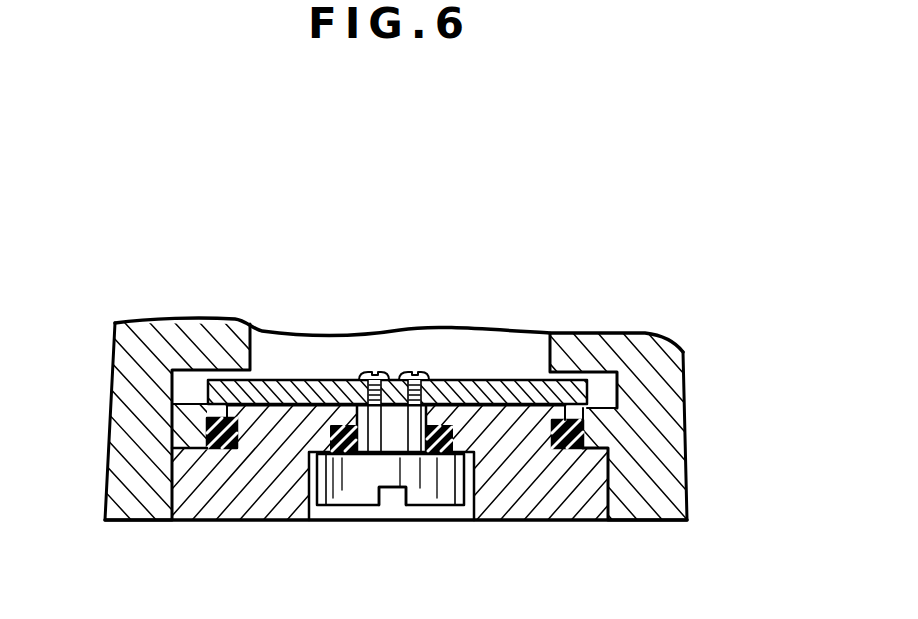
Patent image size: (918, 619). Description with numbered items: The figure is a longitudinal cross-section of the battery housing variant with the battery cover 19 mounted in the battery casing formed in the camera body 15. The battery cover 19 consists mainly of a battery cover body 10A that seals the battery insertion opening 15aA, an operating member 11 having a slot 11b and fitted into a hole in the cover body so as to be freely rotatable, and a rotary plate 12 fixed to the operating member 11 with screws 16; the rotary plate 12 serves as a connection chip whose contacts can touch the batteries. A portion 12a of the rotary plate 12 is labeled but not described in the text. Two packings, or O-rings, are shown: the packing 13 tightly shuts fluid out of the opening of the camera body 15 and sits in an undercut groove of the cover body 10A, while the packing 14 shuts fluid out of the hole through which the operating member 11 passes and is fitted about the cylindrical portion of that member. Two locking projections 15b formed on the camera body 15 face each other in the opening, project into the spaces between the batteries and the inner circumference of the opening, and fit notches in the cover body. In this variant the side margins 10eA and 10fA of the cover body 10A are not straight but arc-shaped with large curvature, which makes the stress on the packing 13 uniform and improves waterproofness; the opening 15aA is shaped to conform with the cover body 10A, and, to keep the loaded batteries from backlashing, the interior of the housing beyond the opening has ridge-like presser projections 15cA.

The battery cover body 10A is at (582, 502).
The side margin 10eA is at (552, 446).
The side margin 10fA is at (241, 434).
The operating member 11 is at (437, 493).
The slot 11b is at (379, 490).
The rotary plate 12 is at (503, 372).
The step portion of plate recess 12a is at (218, 368).
The packing 13 is at (213, 449).
The packing 14 is at (347, 425).
The camera body 15 is at (133, 356).
The opening 15aA is at (206, 428).
The locking projections 15b is at (217, 409).
The ridge-like presser projections 15cA is at (258, 333).
The screws 16 is at (416, 371).
The battery cover 19 is at (445, 318).